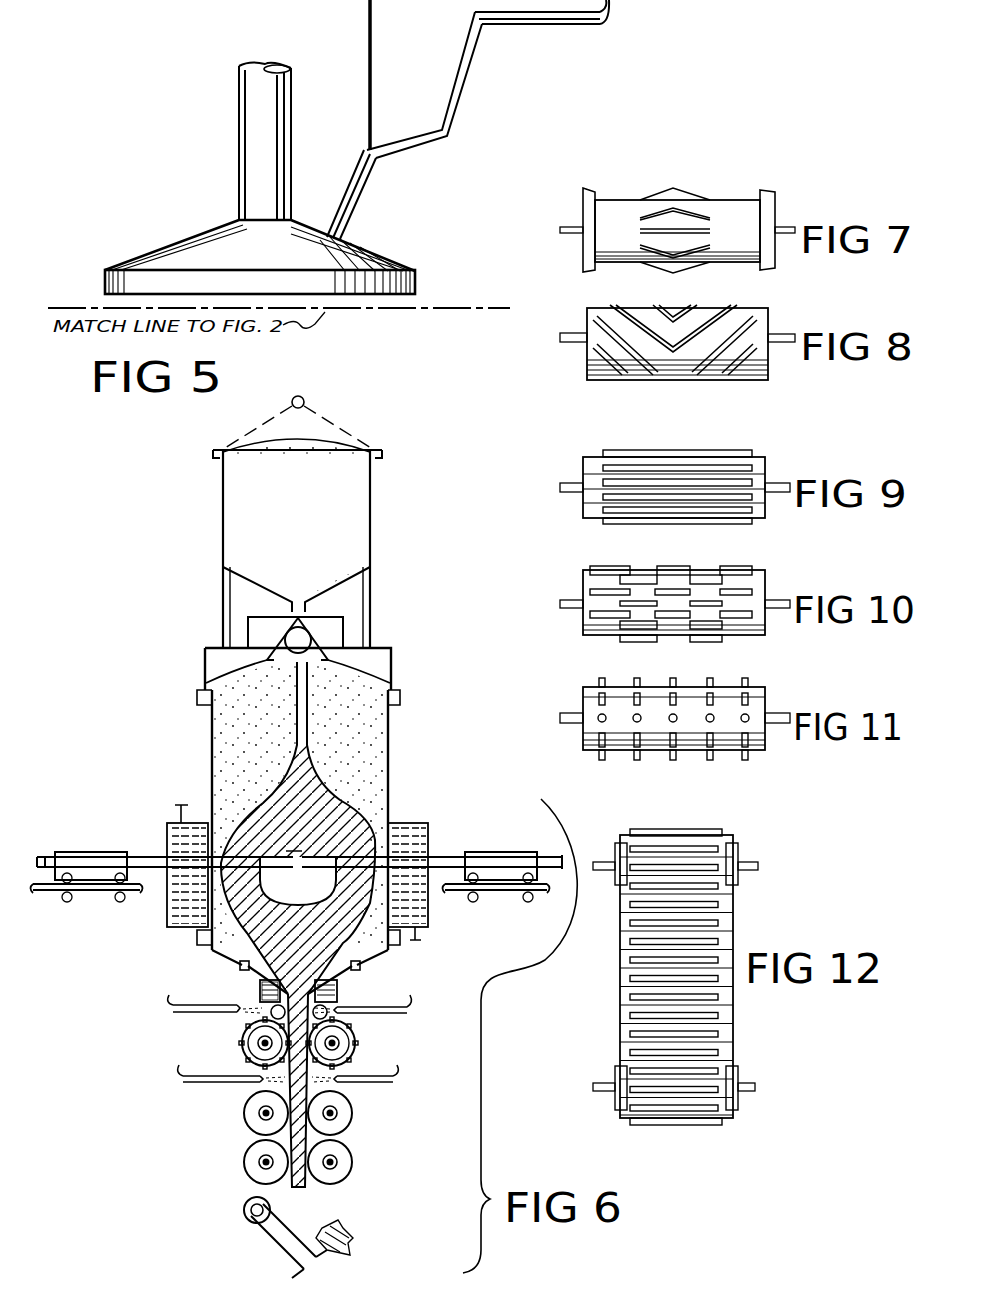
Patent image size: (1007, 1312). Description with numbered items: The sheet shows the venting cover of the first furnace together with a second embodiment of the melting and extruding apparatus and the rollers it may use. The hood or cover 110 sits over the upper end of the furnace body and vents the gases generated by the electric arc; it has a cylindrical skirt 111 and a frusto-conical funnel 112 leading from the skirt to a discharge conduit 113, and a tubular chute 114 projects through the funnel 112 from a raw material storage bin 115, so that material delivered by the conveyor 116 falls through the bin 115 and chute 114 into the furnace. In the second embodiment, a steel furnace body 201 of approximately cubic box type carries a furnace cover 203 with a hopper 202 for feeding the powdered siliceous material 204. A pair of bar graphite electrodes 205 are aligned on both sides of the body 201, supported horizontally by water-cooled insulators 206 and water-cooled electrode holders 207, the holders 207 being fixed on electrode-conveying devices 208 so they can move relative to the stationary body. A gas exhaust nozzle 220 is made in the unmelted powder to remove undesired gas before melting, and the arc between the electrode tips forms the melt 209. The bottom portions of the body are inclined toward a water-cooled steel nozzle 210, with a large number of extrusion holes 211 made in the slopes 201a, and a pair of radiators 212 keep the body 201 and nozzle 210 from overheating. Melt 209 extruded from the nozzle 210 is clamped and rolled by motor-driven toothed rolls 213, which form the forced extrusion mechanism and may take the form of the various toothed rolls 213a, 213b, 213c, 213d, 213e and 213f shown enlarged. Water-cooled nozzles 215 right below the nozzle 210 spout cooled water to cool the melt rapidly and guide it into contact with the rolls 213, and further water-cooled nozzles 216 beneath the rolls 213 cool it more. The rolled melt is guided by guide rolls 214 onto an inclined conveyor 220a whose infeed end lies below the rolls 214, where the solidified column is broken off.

In FIG. 5, the hood or cover 110 is at (402, 266).
In FIG. 5, the cylindrical skirt 111 is at (416, 285).
In FIG. 5, the frusto-conical or truncated funnel 112 is at (188, 250).
In FIG. 5, the discharge conduit 113 is at (243, 134).
In FIG. 5, the tubular chute 114 is at (361, 183).
In FIG. 5, the raw material storage bin 115 is at (447, 100).
In FIG. 5, the conveyor 116 is at (590, 22).
In FIG. 6, the steel furnace body 201 is at (389, 771).
In FIG. 6, the slopes 201a is at (272, 960).
In FIG. 6, the hopper 202 is at (371, 507).
In FIG. 6, the furnace cover 203 is at (394, 669).
In FIG. 6, the powdered siliceous material 204 is at (343, 562).
In FIG. 6, the bar graphite electrodes 205 is at (266, 863).
In FIG. 6, the water-cooled insulators 206 is at (416, 856).
In FIG. 6, the water-cooled electrode holders 207 is at (105, 857).
In FIG. 6, the electrode-conveying devices 208 is at (68, 883).
In FIG. 6, the melt 209 is at (278, 773).
In FIG. 6, the water-cooled steel nozzle 210 is at (262, 993).
In FIG. 6, the extrusion holes 211 is at (238, 966).
In FIG. 6, the radiators 212 is at (175, 822).
In FIG. 6, the toothed rolls 213 is at (245, 1041).
In FIG. 7, the toothed roll 213a is at (712, 204).
In FIG. 8, the toothed roll 213b is at (745, 318).
In FIG. 9, the toothed roll 213c is at (749, 457).
In FIG. 10, the toothed roll 213d is at (755, 574).
In FIG. 11, the toothed roll 213e is at (750, 691).
In FIG. 12, the toothed roll 213f is at (724, 899).
In FIG. 6, the guide rolls 214 is at (258, 1150).
In FIG. 6, the water-cooled nozzles 215 is at (210, 1005).
In FIG. 6, the water-cooled nozzles 216 is at (230, 1075).
In FIG. 6, the gas exhaust nozzle 220 is at (322, 646).
In FIG. 6, the inclined conveyor 220a is at (295, 1226).